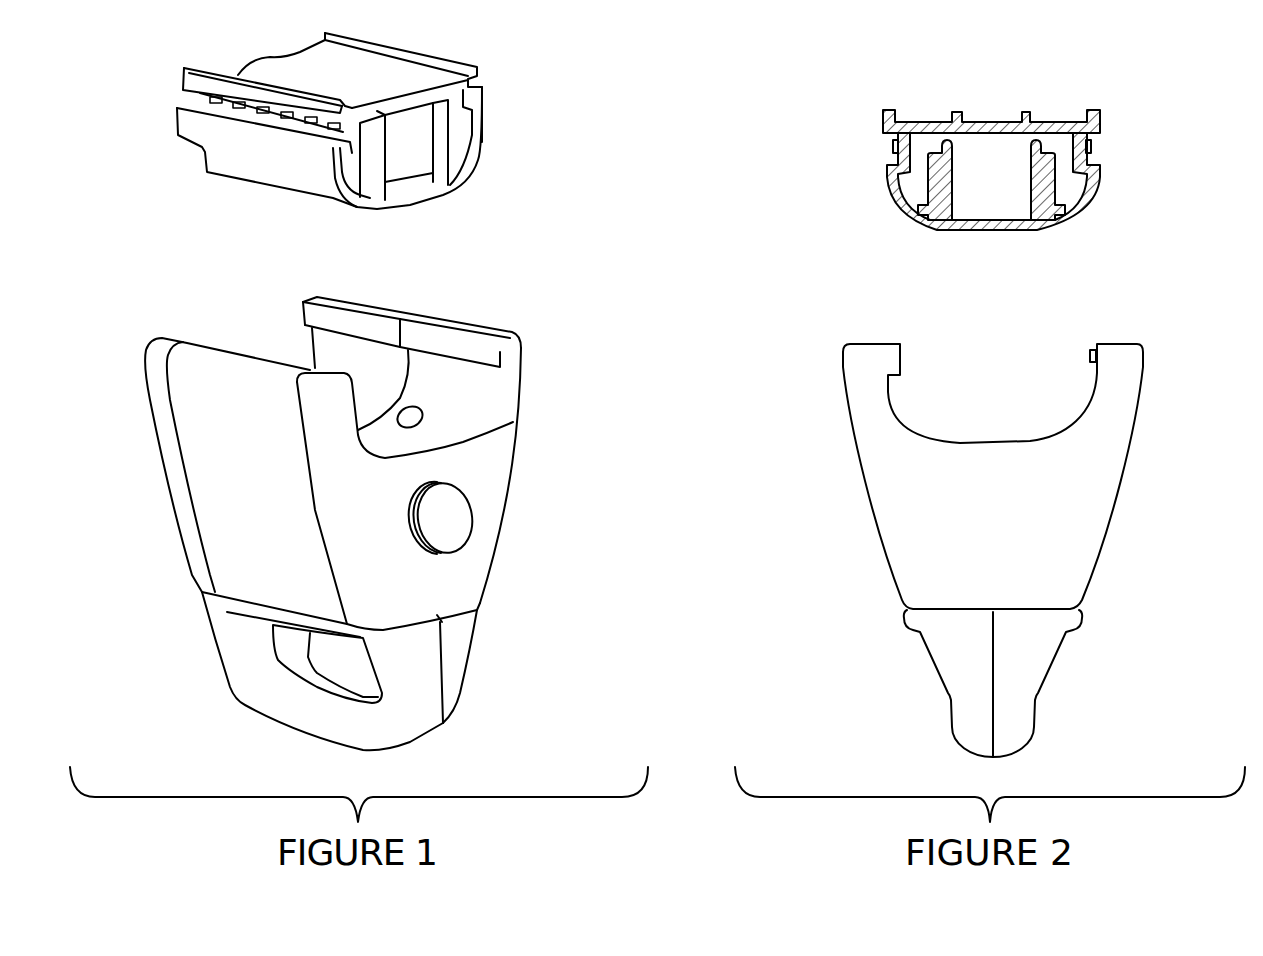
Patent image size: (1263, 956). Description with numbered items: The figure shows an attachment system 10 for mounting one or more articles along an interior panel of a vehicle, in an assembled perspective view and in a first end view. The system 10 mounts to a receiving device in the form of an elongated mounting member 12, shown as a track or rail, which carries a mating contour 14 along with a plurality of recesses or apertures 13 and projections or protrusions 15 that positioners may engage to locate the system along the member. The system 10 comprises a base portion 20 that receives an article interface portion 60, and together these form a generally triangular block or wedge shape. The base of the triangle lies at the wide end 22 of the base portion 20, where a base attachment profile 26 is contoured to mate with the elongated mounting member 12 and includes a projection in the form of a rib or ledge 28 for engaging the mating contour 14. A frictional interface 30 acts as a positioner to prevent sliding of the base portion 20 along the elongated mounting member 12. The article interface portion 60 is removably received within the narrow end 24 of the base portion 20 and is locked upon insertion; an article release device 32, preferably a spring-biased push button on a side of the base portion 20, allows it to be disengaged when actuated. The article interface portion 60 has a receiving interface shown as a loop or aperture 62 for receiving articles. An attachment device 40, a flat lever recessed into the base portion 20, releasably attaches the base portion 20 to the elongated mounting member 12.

In FIG. 1, the attachment system 10 is at (152, 240).
In FIG. 2, the attachment system 10 is at (812, 286).
In FIG. 1, the elongated mounting member 12 is at (413, 78).
In FIG. 2, the elongated mounting member 12 is at (1100, 124).
In FIG. 1, the recesses or apertures 13 is at (207, 98).
In FIG. 1, the mating contour 14 is at (479, 90).
In FIG. 2, the mating contour 14 is at (1115, 145).
In FIG. 2, the projections or protrusions 15 is at (890, 148).
In FIG. 1, the base portion 20 is at (490, 493).
In FIG. 2, the base portion 20 is at (1075, 505).
In FIG. 1, the wide end 22 is at (530, 336).
In FIG. 2, the wide end 22 is at (1160, 346).
In FIG. 1, the narrow end 24 is at (513, 608).
In FIG. 2, the narrow end 24 is at (1104, 608).
In FIG. 1, the base attachment profile 26 is at (297, 293).
In FIG. 2, the base attachment profile 26 is at (1082, 314).
In FIG. 1, the rib or ledge 28 is at (467, 346).
In FIG. 2, the rib or ledge 28 is at (902, 355).
In FIG. 1, the frictional interface 30 is at (476, 407).
In FIG. 2, the frictional interface 30 is at (970, 441).
In FIG. 1, the article release device 32 is at (450, 518).
In FIG. 1, the attachment device 40 is at (205, 477).
In FIG. 1, the article interface portion 60 is at (460, 668).
In FIG. 2, the article interface portion 60 is at (967, 713).
In FIG. 1, the loop or aperture 62 is at (277, 690).